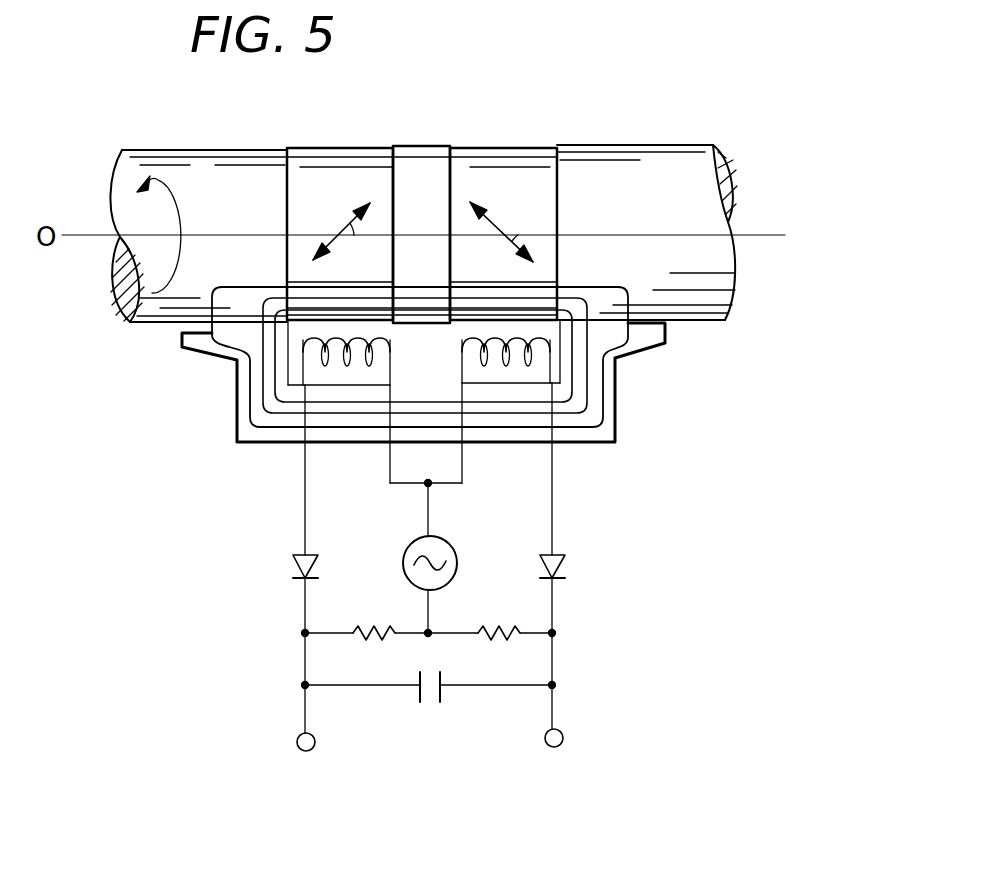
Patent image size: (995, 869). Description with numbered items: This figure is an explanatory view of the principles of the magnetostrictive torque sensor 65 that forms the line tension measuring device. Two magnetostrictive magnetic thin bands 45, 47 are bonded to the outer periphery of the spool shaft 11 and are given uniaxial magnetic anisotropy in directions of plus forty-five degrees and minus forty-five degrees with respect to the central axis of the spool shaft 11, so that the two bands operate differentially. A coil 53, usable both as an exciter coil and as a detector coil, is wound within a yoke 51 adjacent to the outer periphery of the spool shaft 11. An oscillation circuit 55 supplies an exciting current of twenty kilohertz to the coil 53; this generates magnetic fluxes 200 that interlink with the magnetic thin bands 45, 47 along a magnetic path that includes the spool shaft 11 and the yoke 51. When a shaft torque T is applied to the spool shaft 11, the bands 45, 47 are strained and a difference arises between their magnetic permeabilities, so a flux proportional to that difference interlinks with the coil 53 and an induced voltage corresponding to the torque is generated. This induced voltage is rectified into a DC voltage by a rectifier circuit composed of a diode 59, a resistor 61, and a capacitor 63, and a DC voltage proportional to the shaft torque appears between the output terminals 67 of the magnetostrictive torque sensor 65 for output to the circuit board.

The spool shaft 11 is at (150, 148).
The magnetostrictive magnetic thin band 45 is at (325, 148).
The magnetostrictive magnetic thin band 47 is at (520, 148).
The yoke 51 is at (256, 447).
The coil 53 is at (462, 347).
The oscillation circuit 55 is at (450, 548).
The diode 59 is at (292, 570).
The resistor 61 is at (372, 625).
The capacitor 63 is at (446, 703).
The magnetostrictive torque sensor 65 is at (465, 586).
The output terminals 67 is at (297, 745).
The magnetic fluxes 200 is at (268, 388).